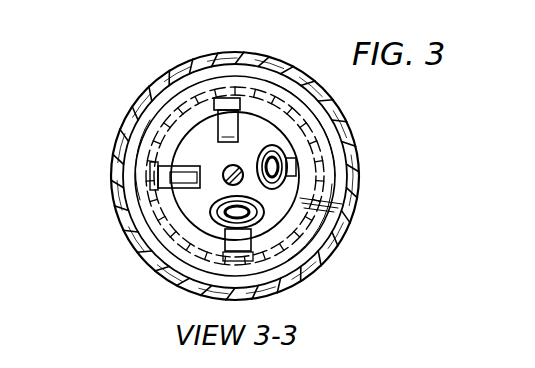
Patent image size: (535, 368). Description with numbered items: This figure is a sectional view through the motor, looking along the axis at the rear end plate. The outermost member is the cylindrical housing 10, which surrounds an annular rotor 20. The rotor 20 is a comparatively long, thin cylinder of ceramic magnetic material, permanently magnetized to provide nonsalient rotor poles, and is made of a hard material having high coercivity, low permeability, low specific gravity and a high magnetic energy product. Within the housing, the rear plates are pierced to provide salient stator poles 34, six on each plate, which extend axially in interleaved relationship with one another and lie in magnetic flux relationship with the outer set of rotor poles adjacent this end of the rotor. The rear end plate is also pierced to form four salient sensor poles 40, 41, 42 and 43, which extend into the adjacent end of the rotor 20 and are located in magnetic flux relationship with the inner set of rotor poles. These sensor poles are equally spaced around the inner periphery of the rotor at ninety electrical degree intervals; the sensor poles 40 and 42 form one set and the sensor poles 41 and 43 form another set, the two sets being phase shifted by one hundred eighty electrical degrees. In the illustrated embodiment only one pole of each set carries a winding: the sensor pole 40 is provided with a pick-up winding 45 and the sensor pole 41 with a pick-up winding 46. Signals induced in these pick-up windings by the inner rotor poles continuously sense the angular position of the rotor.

The cylindrical housing 10 is at (288, 63).
The annular rotor 20 is at (180, 133).
The salient stator poles 34 is at (217, 82).
The sensor pole 40 is at (288, 190).
The sensor pole 41 is at (328, 246).
The sensor pole 42 is at (160, 168).
The sensor pole 43 is at (202, 140).
The pick-up winding 45 is at (270, 146).
The pick-up winding 46 is at (212, 212).